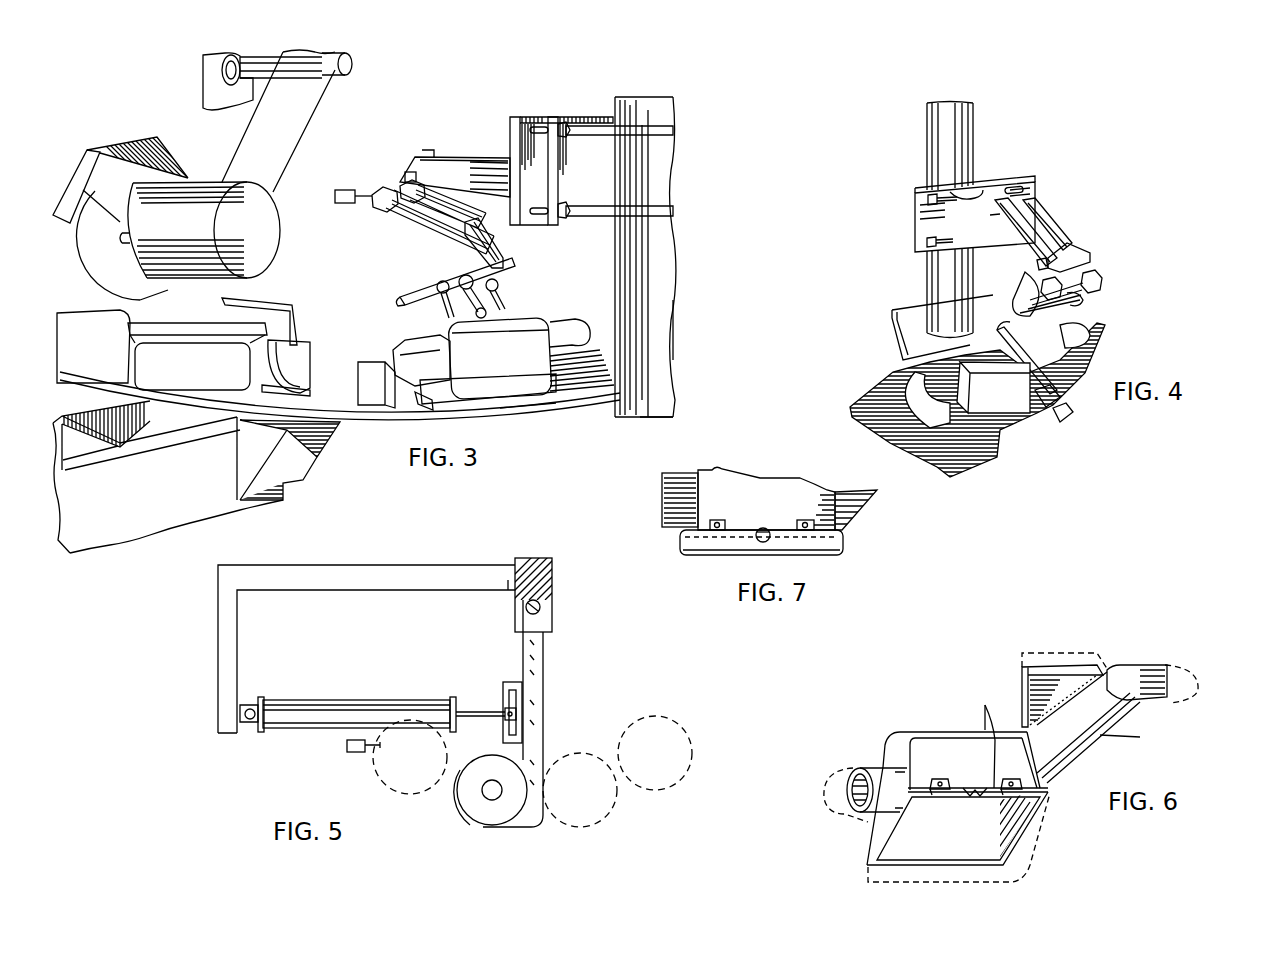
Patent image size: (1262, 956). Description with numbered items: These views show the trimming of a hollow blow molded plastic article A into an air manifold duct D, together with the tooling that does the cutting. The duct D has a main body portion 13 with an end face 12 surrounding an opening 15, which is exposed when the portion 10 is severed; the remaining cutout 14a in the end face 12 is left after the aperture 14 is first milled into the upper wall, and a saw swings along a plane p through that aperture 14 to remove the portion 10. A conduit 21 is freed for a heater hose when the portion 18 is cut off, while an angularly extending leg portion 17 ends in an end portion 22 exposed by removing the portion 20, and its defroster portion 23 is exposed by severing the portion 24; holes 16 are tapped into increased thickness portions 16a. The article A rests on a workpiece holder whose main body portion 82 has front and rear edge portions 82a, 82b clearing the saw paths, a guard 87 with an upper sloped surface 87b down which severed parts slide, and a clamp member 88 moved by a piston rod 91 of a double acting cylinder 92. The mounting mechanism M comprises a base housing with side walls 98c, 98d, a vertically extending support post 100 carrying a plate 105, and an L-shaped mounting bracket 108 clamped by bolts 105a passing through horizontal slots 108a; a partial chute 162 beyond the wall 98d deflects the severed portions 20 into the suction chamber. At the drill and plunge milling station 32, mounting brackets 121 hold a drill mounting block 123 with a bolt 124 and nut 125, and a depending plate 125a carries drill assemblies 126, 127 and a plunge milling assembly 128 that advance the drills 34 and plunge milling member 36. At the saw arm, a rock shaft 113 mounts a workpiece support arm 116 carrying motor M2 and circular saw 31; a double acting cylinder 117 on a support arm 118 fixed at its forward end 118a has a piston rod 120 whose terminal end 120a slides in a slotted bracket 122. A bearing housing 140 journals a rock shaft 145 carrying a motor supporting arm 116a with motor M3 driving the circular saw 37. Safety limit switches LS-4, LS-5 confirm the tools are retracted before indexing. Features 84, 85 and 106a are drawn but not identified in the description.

In FIG. 3, the severed portion 10 is at (545, 392).
In FIG. 7, the severed portion 10 is at (820, 547).
In FIG. 6, the severed portion 10 is at (1020, 866).
In FIG. 6, the end face 12 is at (985, 720).
In FIG. 6, the main body portion 13 is at (1016, 766).
In FIG. 7, the aperture 14 is at (763, 528).
In FIG. 6, the cutout 14a is at (972, 788).
In FIG. 6, the opening 15 is at (1013, 823).
In FIG. 6, the holes 16 is at (938, 780).
In FIG. 6, the increased thickness portions 16a is at (1047, 788).
In FIG. 6, the angularly extending leg portion 17 is at (1083, 740).
In FIG. 3, the end portion 18 is at (410, 366).
In FIG. 6, the end portion 18 is at (832, 812).
In FIG. 3, the end portion 20 is at (575, 326).
In FIG. 6, the end portion 20 is at (1172, 668).
In FIG. 6, the conduit 21 is at (880, 774).
In FIG. 6, the end portion 22 is at (1133, 665).
In FIG. 6, the defroster portion 23 is at (1020, 676).
In FIG. 6, the severed portion 24 is at (1068, 655).
In FIG. 5, the circular saw 31 is at (448, 756).
In FIG. 3, the drill and plunge milling station 32 is at (690, 347).
In FIG. 4, the drill and plunge milling station 32 is at (1080, 190).
In FIG. 3, the drills 34 is at (445, 305).
In FIG. 3, the plunge milling member 36 is at (468, 313).
In FIG. 3, the circular saw 37 is at (96, 285).
In FIG. 3, the main body portion 82 is at (528, 400).
In FIG. 3, the front edge portion 82a is at (448, 400).
In FIG. 4, the rear edge portion 82b is at (993, 387).
In FIG. 3, the rail 84 is at (298, 390).
In FIG. 3, the guide plate 85 is at (253, 306).
In FIG. 3, the guard 87 is at (380, 393).
In FIG. 3, the upper sloped surface 87b is at (428, 400).
In FIG. 4, the clamp member 88 is at (1085, 338).
In FIG. 4, the piston rod 91 is at (1065, 365).
In FIG. 4, the double acting cylinder 92 is at (1073, 412).
In FIG. 3, the side wall 98c is at (106, 420).
In FIG. 3, the side wall 98d is at (168, 431).
In FIG. 3, the support post 100 is at (668, 283).
In FIG. 3, the support bracket plate 105 is at (588, 222).
In FIG. 3, the bolts 105a is at (572, 122).
In FIG. 4, the bolts 105a is at (915, 196).
In FIG. 3, the bolts 106a is at (655, 207).
In FIG. 3, the L-shaped mounting bracket 108 is at (519, 119).
In FIG. 4, the L-shaped mounting bracket 108 is at (915, 225).
In FIG. 3, the horizontal slots 108a is at (543, 126).
In FIG. 4, the horizontal slots 108a is at (973, 200).
In FIG. 5, the rock shaft 113 is at (541, 609).
In FIG. 5, the workpiece support arm 116 is at (545, 713).
In FIG. 3, the motor supporting arm 116a is at (297, 115).
In FIG. 5, the double acting cylinder 117 is at (325, 708).
In FIG. 5, the support arm 118 is at (297, 580).
In FIG. 5, the forward end 118a is at (508, 582).
In FIG. 5, the piston rod 120 is at (478, 712).
In FIG. 5, the terminal end 120a is at (517, 722).
In FIG. 3, the mounting brackets 121 is at (481, 165).
In FIG. 4, the mounting brackets 121 is at (1000, 215).
In FIG. 5, the slotted bracket 122 is at (522, 685).
In FIG. 3, the drill mounting block 123 is at (485, 225).
In FIG. 4, the drill mounting block 123 is at (1070, 255).
In FIG. 4, the bolt 124 is at (1035, 265).
In FIG. 3, the nut 125 is at (416, 177).
In FIG. 3, the plate 125a is at (405, 300).
In FIG. 4, the drill assembly 126 is at (1028, 300).
In FIG. 3, the drill assembly 127 is at (402, 238).
In FIG. 4, the drill assembly 127 is at (1092, 296).
In FIG. 3, the plunge milling assembly 128 is at (385, 208).
In FIG. 4, the plunge milling assembly 128 is at (1098, 278).
In FIG. 3, the bearing housing 140 is at (225, 95).
In FIG. 3, the rock shaft 145 is at (333, 70).
In FIG. 3, the partial chute 162 is at (313, 458).
In FIG. 7, the article A is at (751, 492).
In FIG. 6, the article A is at (1140, 737).
In FIG. 6, the air manifold duct D is at (937, 728).
In FIG. 3, the mounting mechanism M is at (690, 404).
In FIG. 5, the electrically operated motor M2 is at (475, 802).
In FIG. 3, the electrical motor M3 is at (185, 265).
In FIG. 5, the safety limit switch LS-4 is at (355, 752).
In FIG. 3, the safety limit switch LS-5 is at (345, 190).
In FIG. 7, the plane p is at (718, 540).